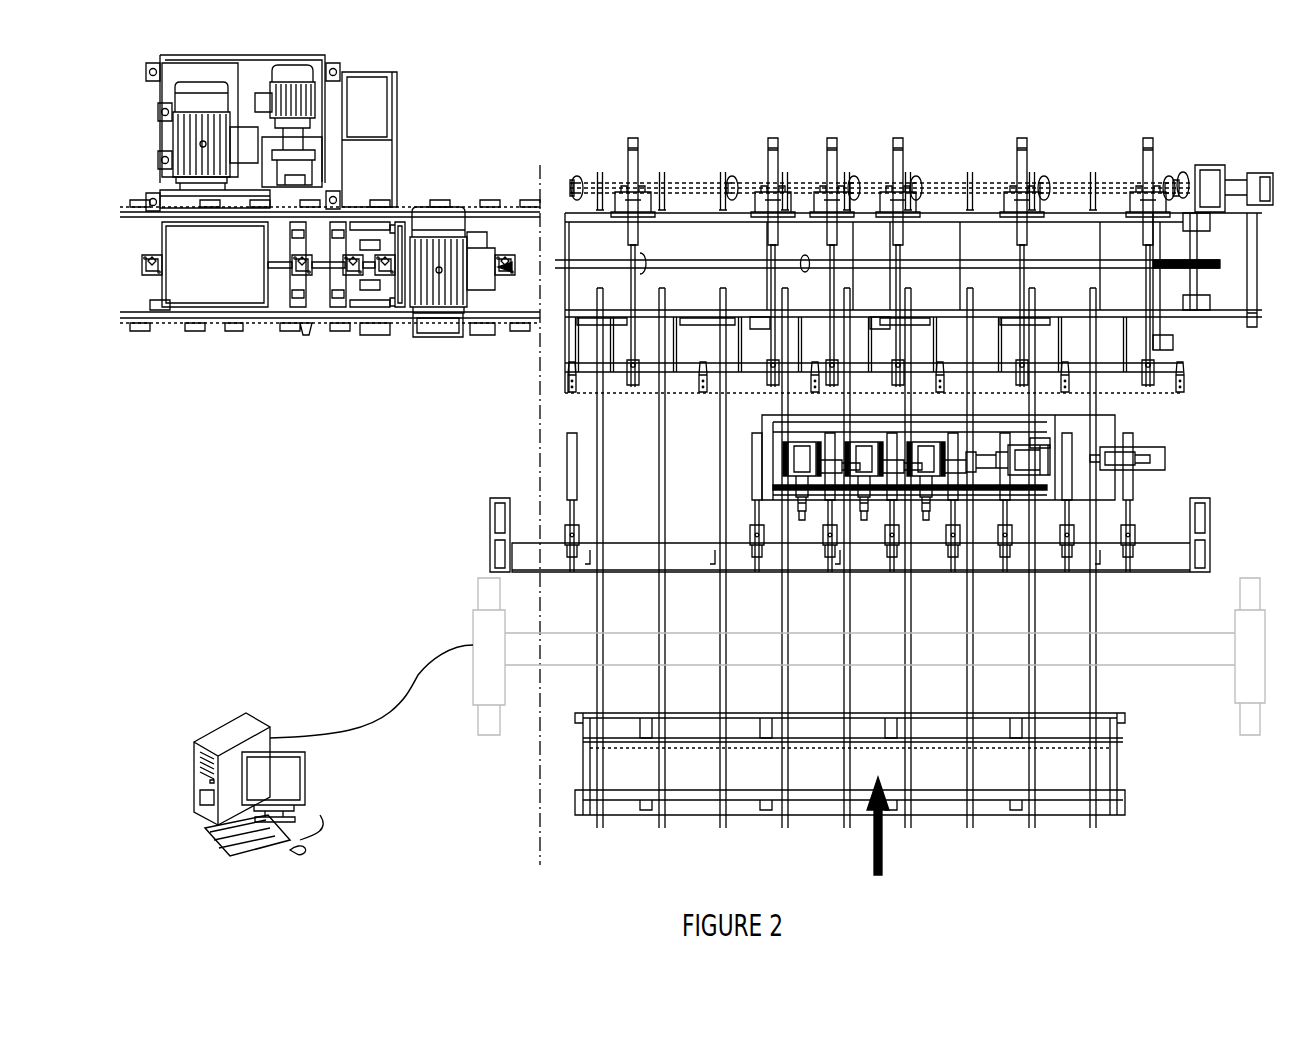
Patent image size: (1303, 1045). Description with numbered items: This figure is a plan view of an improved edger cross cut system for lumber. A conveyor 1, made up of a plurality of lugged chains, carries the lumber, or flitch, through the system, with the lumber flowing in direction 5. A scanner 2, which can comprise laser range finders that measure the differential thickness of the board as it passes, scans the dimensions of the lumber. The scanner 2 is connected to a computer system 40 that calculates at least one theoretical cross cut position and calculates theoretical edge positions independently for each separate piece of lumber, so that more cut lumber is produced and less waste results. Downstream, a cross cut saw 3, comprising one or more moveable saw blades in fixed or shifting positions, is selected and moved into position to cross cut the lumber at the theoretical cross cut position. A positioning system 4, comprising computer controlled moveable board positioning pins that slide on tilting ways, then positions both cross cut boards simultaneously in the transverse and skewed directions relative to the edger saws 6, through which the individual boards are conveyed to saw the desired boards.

The conveyor 1 is at (583, 767).
The scanner 2 is at (473, 630).
The cross cut saw 3 is at (1055, 455).
The positioning system 4 is at (826, 170).
The direction 5 is at (872, 840).
The edger saws 6 is at (393, 315).
The computer system 40 is at (218, 727).